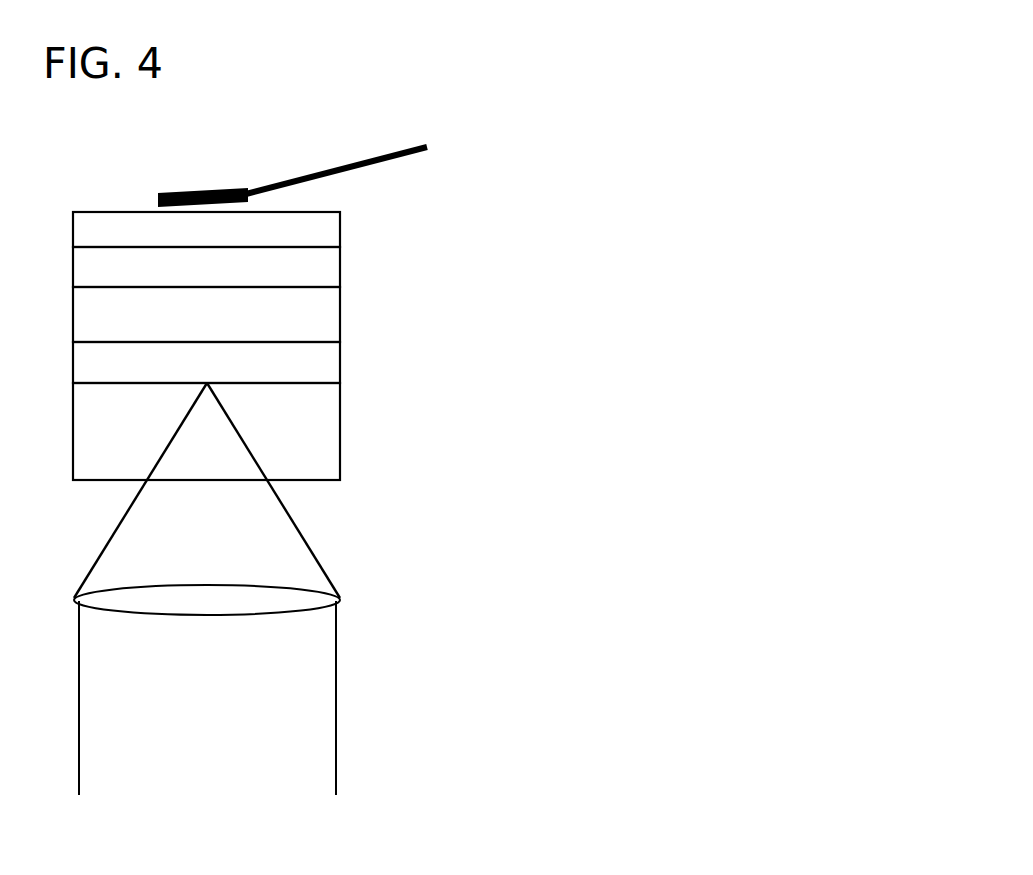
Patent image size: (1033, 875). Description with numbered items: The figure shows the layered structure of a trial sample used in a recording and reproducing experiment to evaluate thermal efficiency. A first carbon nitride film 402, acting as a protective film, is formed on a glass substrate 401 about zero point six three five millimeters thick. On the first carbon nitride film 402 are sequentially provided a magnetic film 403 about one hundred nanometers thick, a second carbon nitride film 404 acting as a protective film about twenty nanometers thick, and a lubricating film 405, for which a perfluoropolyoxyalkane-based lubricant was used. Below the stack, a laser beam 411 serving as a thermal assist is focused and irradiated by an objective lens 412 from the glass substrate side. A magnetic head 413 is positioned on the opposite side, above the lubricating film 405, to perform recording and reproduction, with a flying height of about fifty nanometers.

The glass substrate 401 is at (327, 443).
The first carbon nitride film 402 is at (328, 370).
The magnetic film 403 is at (328, 332).
The second carbon nitride film 404 is at (328, 277).
The lubricating film 405 is at (328, 240).
The laser beam 411 is at (325, 720).
The objective lens 412 is at (338, 600).
The magnetic head 413 is at (305, 176).